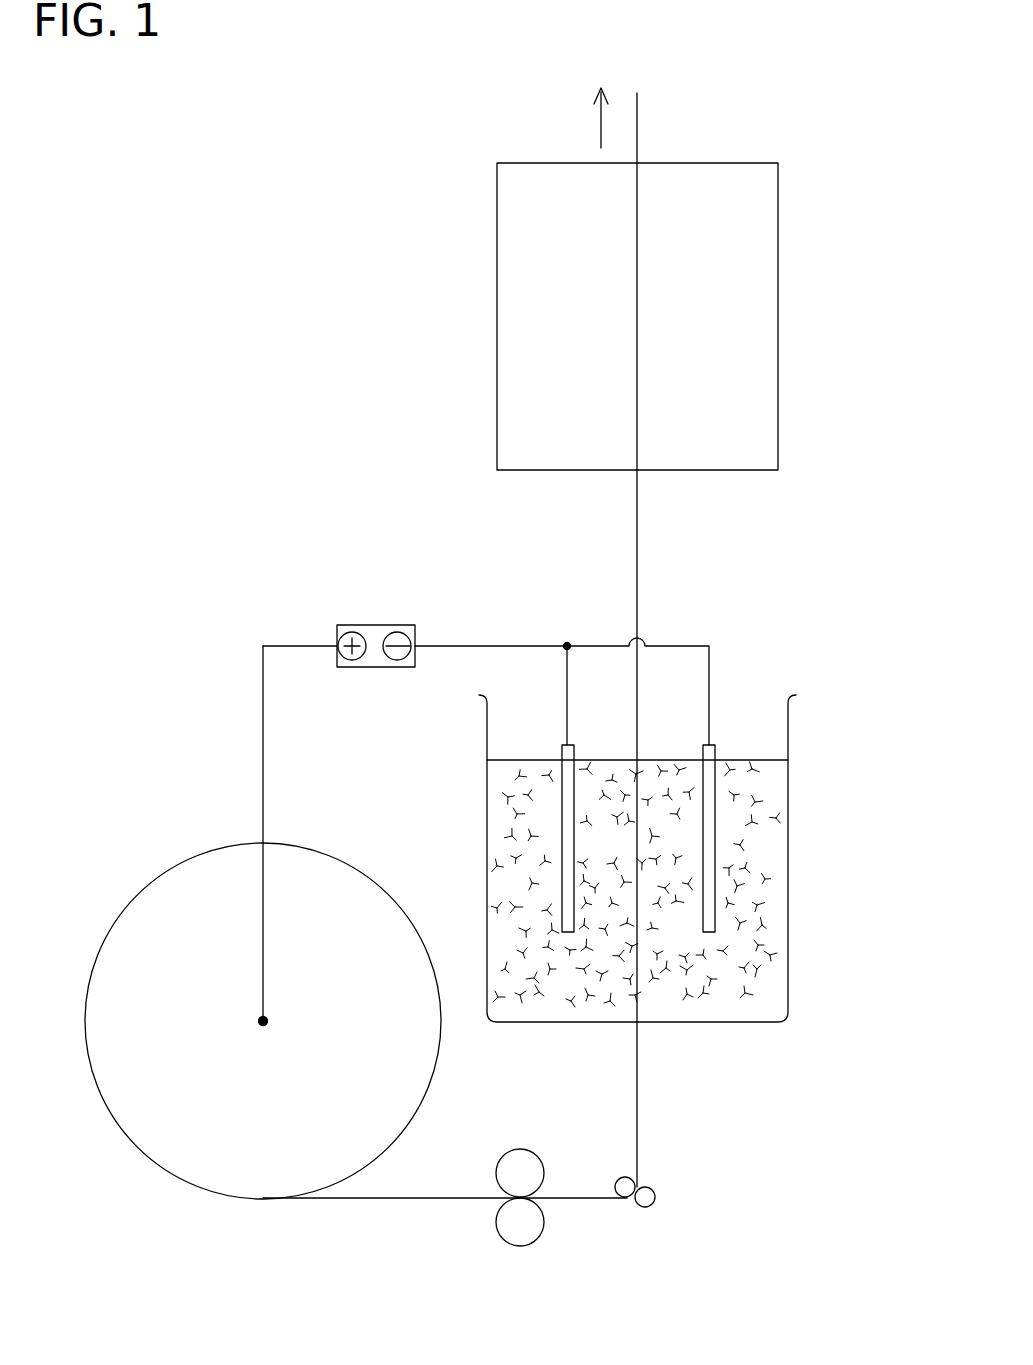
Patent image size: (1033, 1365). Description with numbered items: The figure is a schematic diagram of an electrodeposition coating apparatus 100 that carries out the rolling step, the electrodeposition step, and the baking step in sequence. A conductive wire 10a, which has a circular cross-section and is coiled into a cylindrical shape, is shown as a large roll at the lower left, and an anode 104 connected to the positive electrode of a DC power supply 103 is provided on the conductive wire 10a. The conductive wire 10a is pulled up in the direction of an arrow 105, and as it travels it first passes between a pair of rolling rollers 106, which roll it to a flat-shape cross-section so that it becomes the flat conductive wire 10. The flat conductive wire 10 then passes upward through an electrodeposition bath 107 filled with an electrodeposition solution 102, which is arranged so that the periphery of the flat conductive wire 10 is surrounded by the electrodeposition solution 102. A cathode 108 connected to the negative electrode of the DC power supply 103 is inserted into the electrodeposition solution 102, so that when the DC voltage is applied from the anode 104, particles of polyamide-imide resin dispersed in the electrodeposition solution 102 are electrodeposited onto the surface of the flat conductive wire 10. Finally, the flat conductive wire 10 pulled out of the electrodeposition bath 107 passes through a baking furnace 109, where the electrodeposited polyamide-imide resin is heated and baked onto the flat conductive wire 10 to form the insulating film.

The electrodeposition coating apparatus 100 is at (245, 323).
The flat conductive wire 10 is at (637, 538).
The conductive wire 10a is at (172, 866).
The electrodeposition solution 102 is at (772, 850).
The DC power supply 103 is at (375, 625).
The anode 104 is at (257, 1022).
The arrow 105 is at (601, 133).
The pair of rolling rollers 106 is at (530, 1245).
The electrodeposition bath 107 is at (738, 1025).
The cathode 108 is at (715, 748).
The baking furnace 109 is at (515, 298).